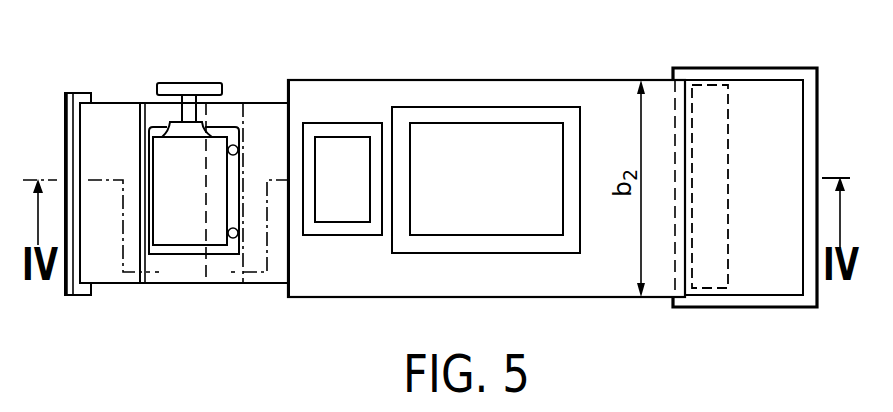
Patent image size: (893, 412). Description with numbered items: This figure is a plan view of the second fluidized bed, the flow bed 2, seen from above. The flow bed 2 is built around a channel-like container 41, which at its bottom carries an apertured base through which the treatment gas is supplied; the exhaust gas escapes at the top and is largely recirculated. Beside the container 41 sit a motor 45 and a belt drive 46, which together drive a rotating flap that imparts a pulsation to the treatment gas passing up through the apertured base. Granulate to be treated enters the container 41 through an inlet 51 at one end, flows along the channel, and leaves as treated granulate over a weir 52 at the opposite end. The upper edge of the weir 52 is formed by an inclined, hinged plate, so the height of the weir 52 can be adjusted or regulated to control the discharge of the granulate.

The flow bed 2 is at (373, 308).
The channel-like container 41 is at (537, 278).
The motor 45 is at (190, 237).
The belt drive 46 is at (212, 88).
The inlet 51 is at (330, 142).
The weir 52 is at (699, 104).